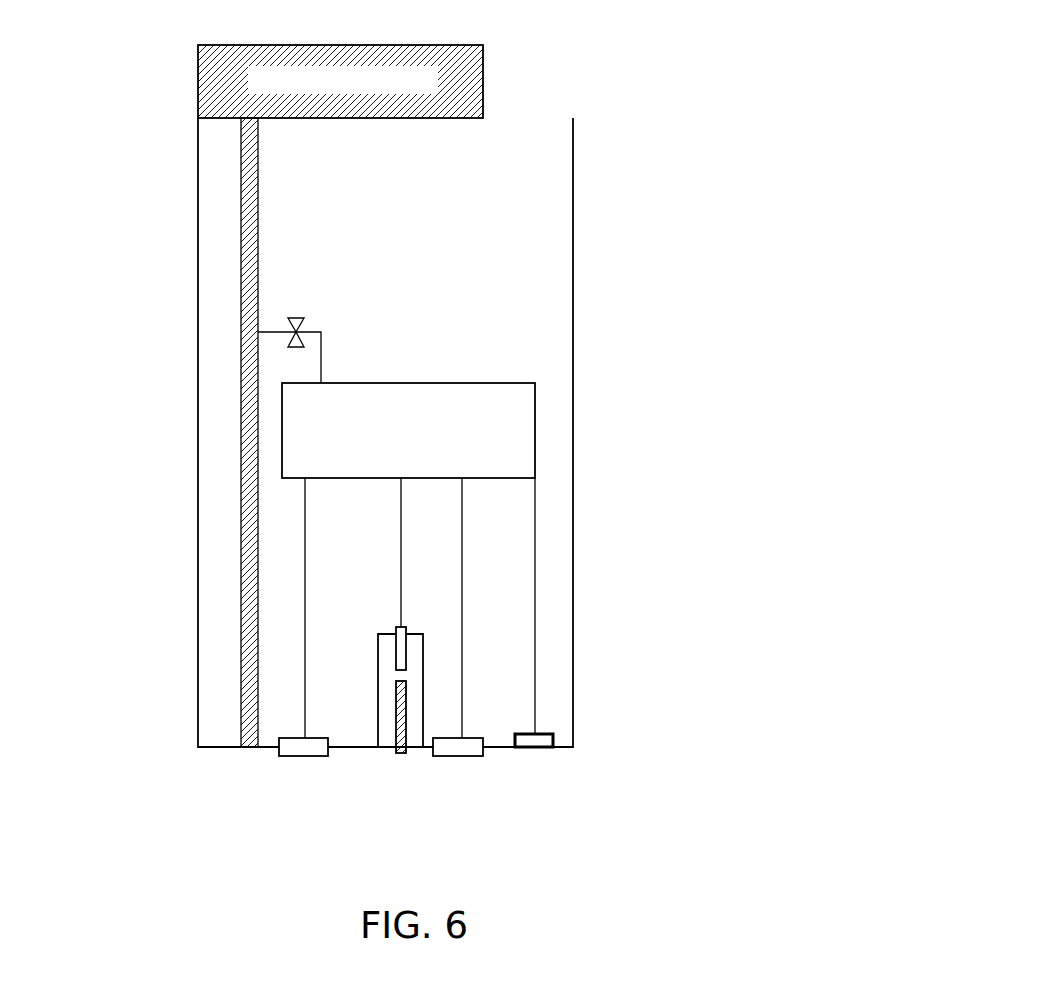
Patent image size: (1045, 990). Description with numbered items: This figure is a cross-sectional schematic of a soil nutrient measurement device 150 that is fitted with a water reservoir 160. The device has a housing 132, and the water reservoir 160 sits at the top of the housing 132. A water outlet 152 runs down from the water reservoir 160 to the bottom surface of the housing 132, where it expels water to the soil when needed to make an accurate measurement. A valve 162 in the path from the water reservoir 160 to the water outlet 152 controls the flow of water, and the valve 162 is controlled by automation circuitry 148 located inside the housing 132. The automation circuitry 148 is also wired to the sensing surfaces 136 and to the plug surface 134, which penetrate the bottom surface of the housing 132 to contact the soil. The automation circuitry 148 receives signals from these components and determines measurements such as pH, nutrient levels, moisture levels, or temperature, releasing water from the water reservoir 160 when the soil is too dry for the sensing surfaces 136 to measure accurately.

The soil nutrient measurement device 150 is at (496, 418).
The housing 132 is at (555, 294).
The water reservoir 160 is at (483, 92).
The water outlets 152 is at (250, 746).
The valve 162 is at (302, 308).
The automation circuitry 148 is at (535, 448).
The sensing surfaces 136 is at (305, 757).
The plug surface 134 is at (405, 752).